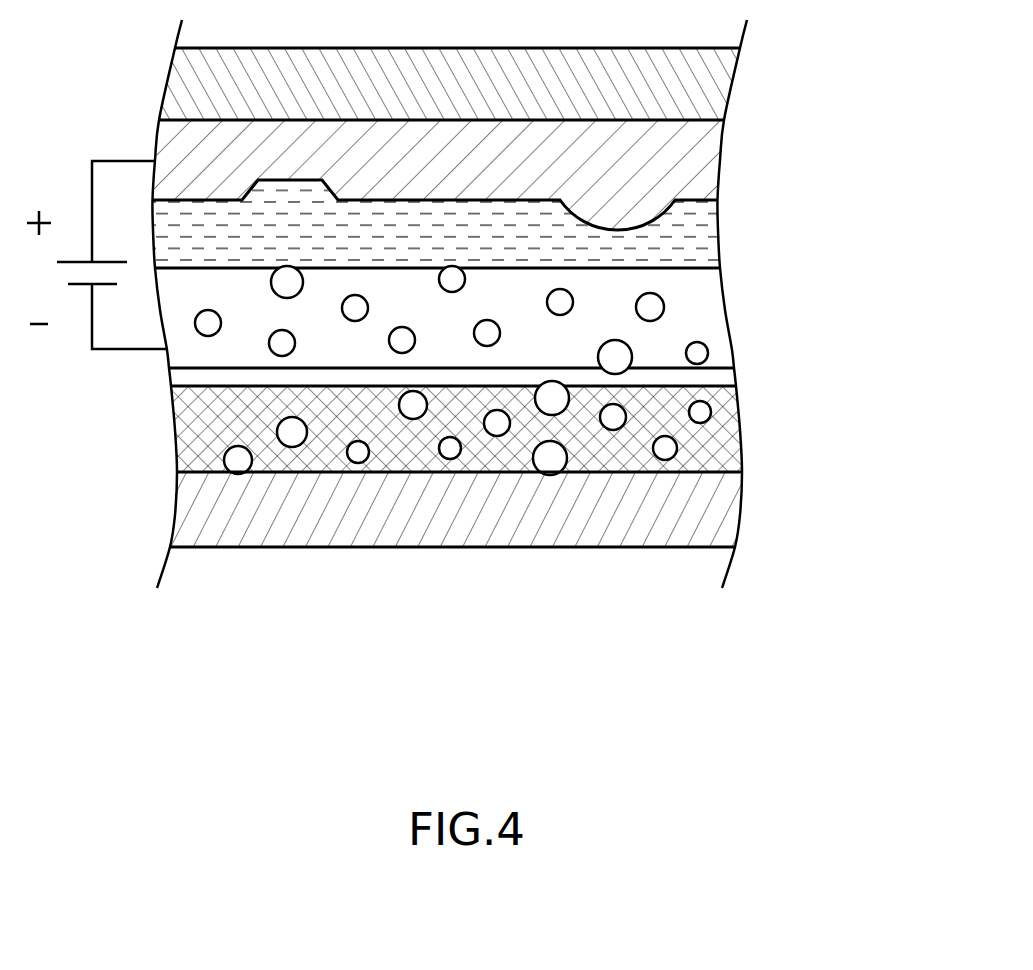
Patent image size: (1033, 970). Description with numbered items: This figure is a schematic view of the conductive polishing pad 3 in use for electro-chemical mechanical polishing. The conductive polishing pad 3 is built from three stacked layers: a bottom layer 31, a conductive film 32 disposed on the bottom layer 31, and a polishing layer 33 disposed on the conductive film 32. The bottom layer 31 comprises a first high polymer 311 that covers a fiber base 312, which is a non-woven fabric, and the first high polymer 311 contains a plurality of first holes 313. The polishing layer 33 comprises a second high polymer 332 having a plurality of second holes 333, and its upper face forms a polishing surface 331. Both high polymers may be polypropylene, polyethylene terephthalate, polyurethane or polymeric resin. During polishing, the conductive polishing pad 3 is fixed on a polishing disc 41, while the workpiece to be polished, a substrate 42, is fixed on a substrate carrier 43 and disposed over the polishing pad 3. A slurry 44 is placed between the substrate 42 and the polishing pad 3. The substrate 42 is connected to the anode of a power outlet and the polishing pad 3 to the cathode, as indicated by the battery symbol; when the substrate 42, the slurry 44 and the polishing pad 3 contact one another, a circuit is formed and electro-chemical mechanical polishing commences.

The conductive polishing pad 3 is at (808, 375).
The bottom layer 31 is at (148, 468).
The conductive film 32 is at (150, 396).
The polishing layer 33 is at (148, 362).
The polishing disc 41 is at (710, 517).
The substrate 42 is at (710, 163).
The substrate carrier 43 is at (710, 93).
The slurry 44 is at (710, 240).
The first high polymer 311 is at (735, 412).
The fiber base 312 is at (712, 462).
The first holes 313 is at (667, 450).
The polishing surface 331 is at (672, 268).
The second high polymer 332 is at (705, 305).
The second holes 333 is at (647, 310).